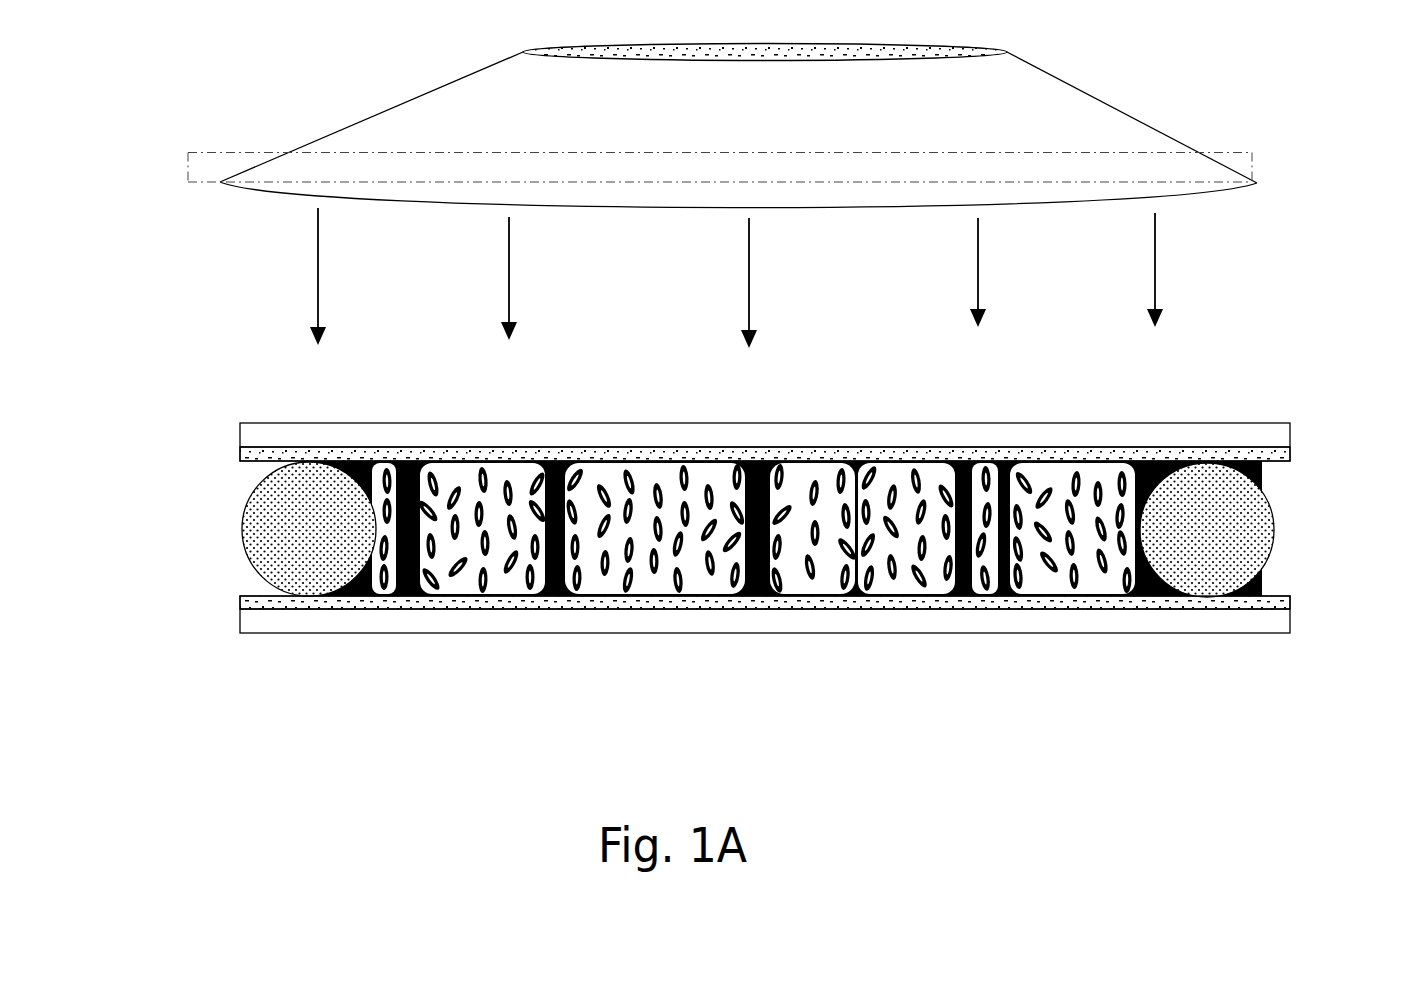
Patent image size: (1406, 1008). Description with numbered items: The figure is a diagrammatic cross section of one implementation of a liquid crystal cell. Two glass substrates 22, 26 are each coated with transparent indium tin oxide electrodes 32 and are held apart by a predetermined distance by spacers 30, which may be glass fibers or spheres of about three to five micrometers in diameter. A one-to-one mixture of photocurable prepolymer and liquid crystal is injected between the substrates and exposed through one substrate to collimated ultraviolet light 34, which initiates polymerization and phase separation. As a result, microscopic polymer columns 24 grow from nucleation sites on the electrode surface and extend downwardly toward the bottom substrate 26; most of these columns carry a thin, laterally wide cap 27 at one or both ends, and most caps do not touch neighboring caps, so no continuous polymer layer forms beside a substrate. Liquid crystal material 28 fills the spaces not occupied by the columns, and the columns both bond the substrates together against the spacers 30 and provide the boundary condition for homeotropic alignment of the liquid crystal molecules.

The glass substrate 22 is at (228, 433).
The polymer columns 24 is at (718, 585).
The bottom substrate 26 is at (228, 618).
The cap 27 is at (547, 598).
The liquid crystal material 28 is at (811, 552).
The spacers 30 is at (758, 529).
The electrodes 32 is at (1283, 586).
The ultraviolet light 34 is at (722, 196).